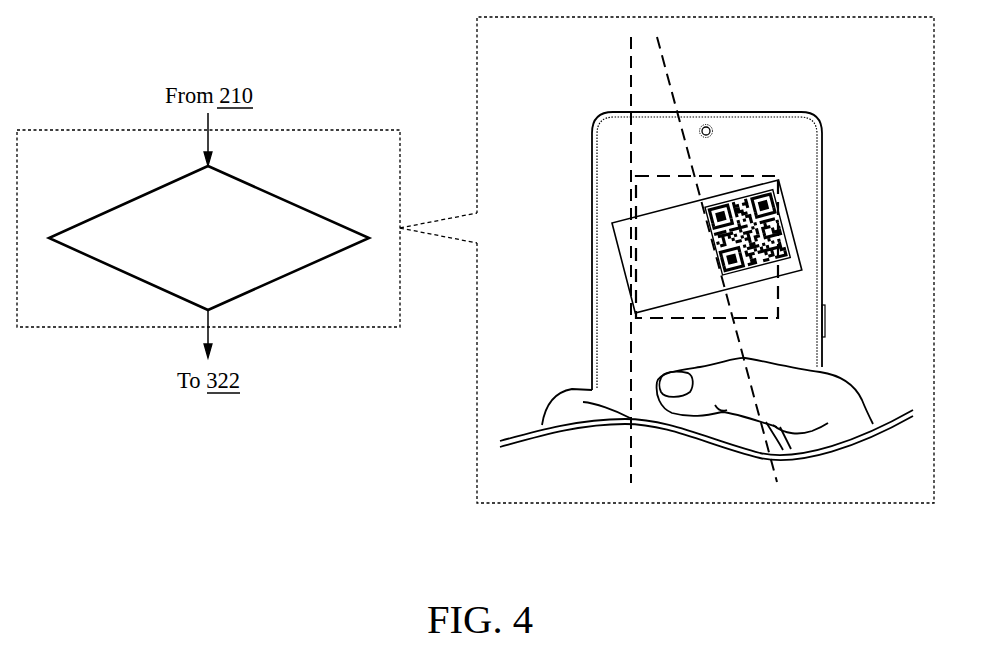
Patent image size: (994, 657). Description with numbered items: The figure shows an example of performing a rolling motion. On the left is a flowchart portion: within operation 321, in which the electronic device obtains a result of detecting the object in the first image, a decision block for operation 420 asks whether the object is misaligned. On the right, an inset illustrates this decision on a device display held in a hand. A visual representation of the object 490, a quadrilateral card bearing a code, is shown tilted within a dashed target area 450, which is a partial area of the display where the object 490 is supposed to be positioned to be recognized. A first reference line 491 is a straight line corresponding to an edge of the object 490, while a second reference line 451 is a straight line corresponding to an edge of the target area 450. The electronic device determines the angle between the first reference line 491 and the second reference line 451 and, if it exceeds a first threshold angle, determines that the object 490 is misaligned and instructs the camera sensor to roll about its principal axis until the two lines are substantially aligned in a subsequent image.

The operation of obtaining object detection result 321 is at (321, 129).
The operation of determining whether object is misaligned 420 is at (290, 198).
The second reference line 451 is at (628, 60).
The first reference line 491 is at (665, 60).
The target area 450 is at (703, 175).
The object 490 is at (782, 230).